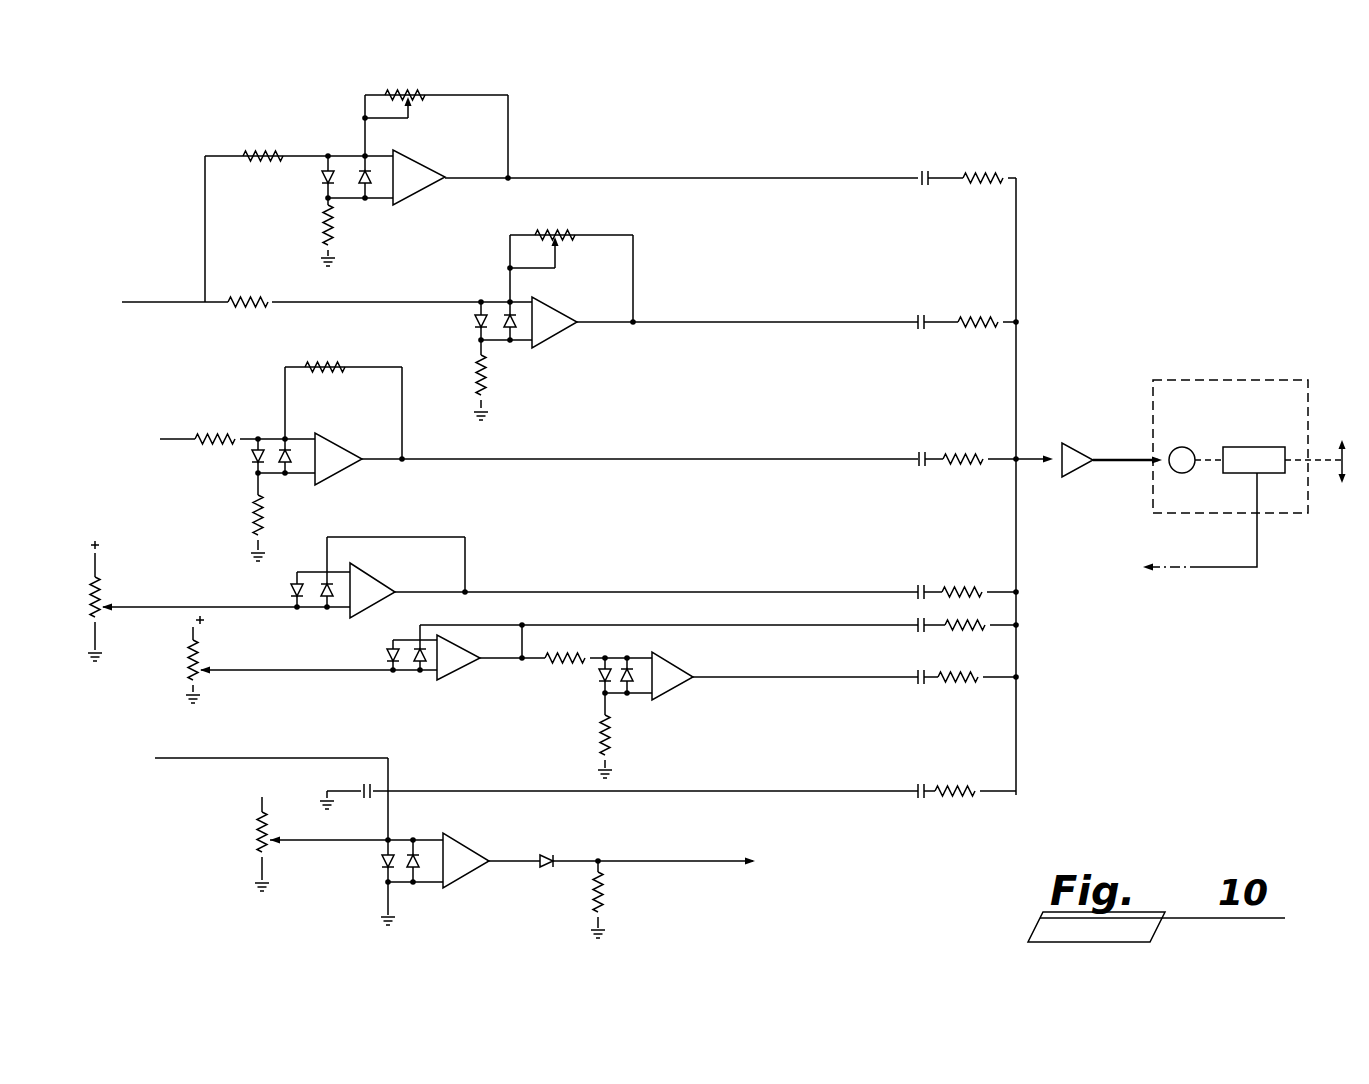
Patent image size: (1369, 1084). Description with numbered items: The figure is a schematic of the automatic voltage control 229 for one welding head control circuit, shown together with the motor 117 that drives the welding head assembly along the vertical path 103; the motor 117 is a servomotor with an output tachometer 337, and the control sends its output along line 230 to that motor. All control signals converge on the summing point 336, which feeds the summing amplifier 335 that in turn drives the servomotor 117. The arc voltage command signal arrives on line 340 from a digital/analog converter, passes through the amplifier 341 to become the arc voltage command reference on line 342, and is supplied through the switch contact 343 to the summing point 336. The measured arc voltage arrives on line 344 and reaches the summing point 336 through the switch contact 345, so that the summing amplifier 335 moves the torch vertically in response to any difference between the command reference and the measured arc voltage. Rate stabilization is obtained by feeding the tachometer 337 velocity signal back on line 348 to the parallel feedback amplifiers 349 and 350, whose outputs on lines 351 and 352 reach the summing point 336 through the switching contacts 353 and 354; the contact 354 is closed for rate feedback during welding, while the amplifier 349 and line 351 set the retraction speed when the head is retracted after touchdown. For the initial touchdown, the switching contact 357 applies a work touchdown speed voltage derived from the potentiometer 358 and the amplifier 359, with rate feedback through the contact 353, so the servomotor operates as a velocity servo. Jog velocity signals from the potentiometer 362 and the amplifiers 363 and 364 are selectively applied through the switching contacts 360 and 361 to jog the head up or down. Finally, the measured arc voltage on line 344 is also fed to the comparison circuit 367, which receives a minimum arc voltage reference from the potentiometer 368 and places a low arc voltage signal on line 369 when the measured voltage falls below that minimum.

The vertical path 103 is at (1348, 466).
The motor 117 is at (1187, 372).
The automatic voltage control 229 is at (700, 915).
The line 230 is at (1122, 228).
The summing amplifier 335 is at (1085, 470).
The summing point 336 is at (1012, 455).
The tachometer 337 is at (1252, 446).
The line 340 is at (183, 441).
The amplifier 341 is at (343, 468).
The line 342 is at (520, 461).
The switch contact 343 is at (921, 455).
The line 344 is at (227, 759).
The switch contact 345 is at (920, 785).
The line 348 is at (165, 300).
The amplifier 349 is at (420, 193).
The amplifier 350 is at (563, 332).
The line 351 is at (755, 180).
The line 352 is at (717, 325).
The switching contact 353 is at (930, 172).
The switching contact 354 is at (925, 316).
The switching contact 357 is at (925, 585).
The potentiometer 358 is at (87, 605).
The amplifier 359 is at (378, 580).
The switching contact 360 is at (925, 622).
The switching contact 361 is at (920, 670).
The potentiometer 362 is at (187, 653).
The amplifier 363 is at (457, 673).
The amplifier 364 is at (678, 686).
The comparison circuit 367 is at (473, 848).
The potentiometer 368 is at (257, 837).
The line 369 is at (688, 836).